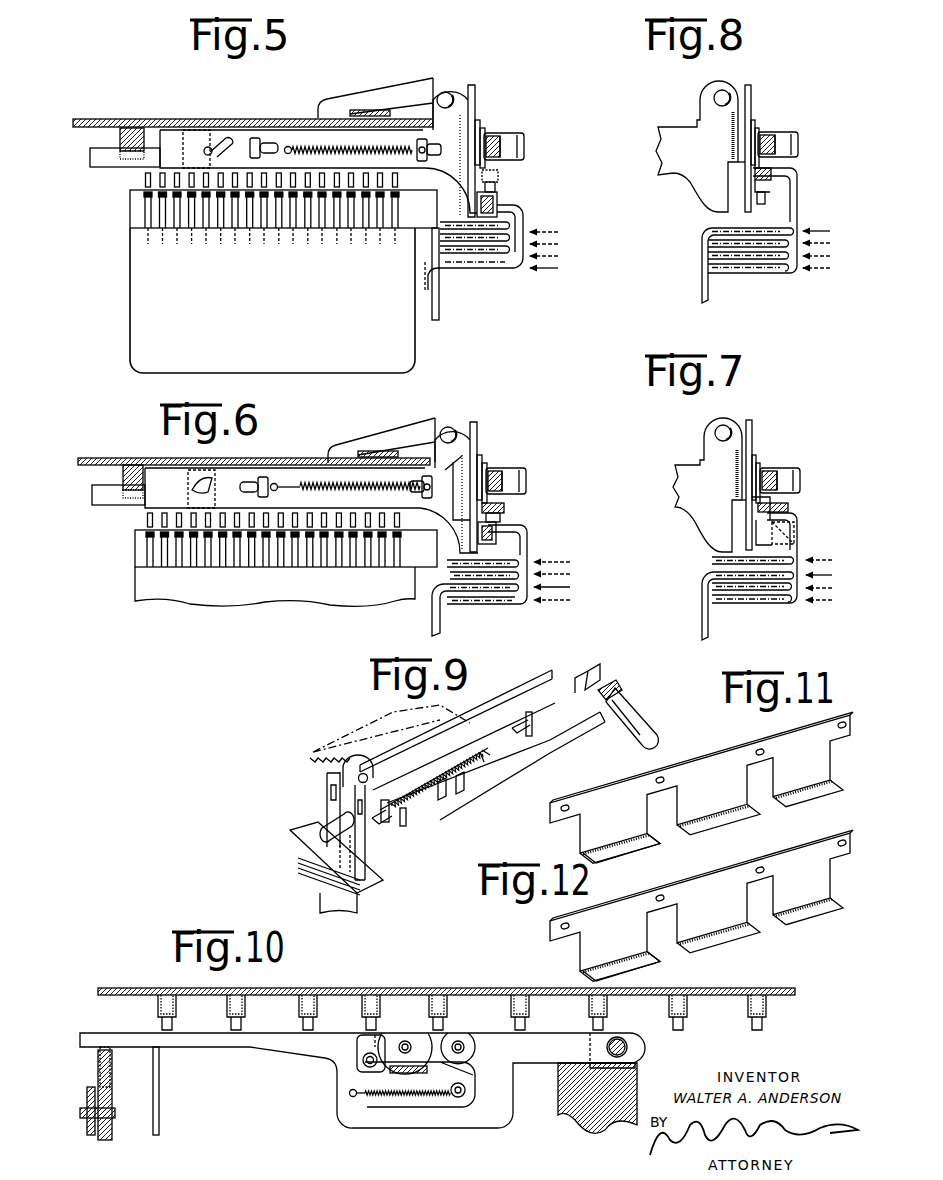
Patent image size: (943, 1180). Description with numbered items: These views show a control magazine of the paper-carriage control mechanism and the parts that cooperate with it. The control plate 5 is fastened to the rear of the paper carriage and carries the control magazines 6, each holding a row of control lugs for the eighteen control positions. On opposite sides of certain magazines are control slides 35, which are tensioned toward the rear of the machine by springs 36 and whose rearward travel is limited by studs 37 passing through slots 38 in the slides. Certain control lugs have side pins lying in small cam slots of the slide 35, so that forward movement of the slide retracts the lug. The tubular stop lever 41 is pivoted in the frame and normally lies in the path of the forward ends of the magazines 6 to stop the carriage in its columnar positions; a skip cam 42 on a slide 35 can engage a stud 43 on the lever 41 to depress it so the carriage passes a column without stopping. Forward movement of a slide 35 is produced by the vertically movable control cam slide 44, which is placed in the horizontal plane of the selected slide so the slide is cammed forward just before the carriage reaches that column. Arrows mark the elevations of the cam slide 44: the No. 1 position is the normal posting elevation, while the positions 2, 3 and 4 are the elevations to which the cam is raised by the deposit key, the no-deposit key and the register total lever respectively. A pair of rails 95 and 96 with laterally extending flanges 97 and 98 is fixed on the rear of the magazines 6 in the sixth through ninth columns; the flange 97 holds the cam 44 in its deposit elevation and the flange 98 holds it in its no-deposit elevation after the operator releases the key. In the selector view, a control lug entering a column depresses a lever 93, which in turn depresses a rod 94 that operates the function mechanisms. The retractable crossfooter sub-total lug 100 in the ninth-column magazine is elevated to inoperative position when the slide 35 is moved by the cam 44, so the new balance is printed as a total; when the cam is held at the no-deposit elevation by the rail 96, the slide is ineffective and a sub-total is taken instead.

In FIG. 5, the No. 1 position 1 is at (551, 268).
In FIG. 8, the No. 1 position 1 is at (822, 268).
In FIG. 7, the No. 1 position 1 is at (825, 600).
In FIG. 6, the No. 1 position 1 is at (558, 600).
In FIG. 5, the second key position strip 2 is at (550, 256).
In FIG. 8, the second key position strip 2 is at (822, 256).
In FIG. 7, the second key position strip 2 is at (825, 588).
In FIG. 6, the second key position strip 2 is at (559, 587).
In FIG. 5, the third key position strip 3 is at (550, 244).
In FIG. 8, the third key position strip 3 is at (822, 243).
In FIG. 7, the third key position strip 3 is at (825, 575).
In FIG. 6, the third key position strip 3 is at (558, 574).
In FIG. 5, the fourth key position strip 4 is at (550, 232).
In FIG. 8, the fourth key position strip 4 is at (823, 231).
In FIG. 7, the fourth key position strip 4 is at (825, 560).
In FIG. 6, the fourth key position strip 4 is at (558, 562).
In FIG. 5, the control plate 5 is at (260, 124).
In FIG. 6, the control plate 5 is at (300, 462).
In FIG. 9, the control plate 5 is at (335, 735).
In FIG. 10, the control plate 5 is at (449, 990).
In FIG. 5, the control magazine 6 is at (437, 93).
In FIG. 8, the control magazine 6 is at (706, 93).
In FIG. 7, the control magazine 6 is at (706, 433).
In FIG. 6, the control magazine 6 is at (438, 433).
In FIG. 9, the control magazine 6 is at (552, 679).
In FIG. 10, the control magazine 6 is at (298, 1011).
In FIG. 6, the control slide 35 is at (455, 471).
In FIG. 9, the control slide 35 is at (462, 722).
In FIG. 5, the spring 36 is at (335, 143).
In FIG. 6, the spring 36 is at (302, 480).
In FIG. 9, the spring 36 is at (440, 790).
In FIG. 5, the stud 37 is at (430, 148).
In FIG. 6, the stud 37 is at (421, 487).
In FIG. 9, the stud 37 is at (386, 812).
In FIG. 5, the slot 38 is at (438, 153).
In FIG. 9, the slot 38 is at (523, 736).
In FIG. 9, the tubular stop lever 41 is at (646, 719).
In FIG. 9, the skip cam 42 is at (598, 688).
In FIG. 9, the stud 43 is at (618, 694).
In FIG. 5, the control cam slide 44 is at (525, 212).
In FIG. 8, the control cam slide 44 is at (797, 200).
In FIG. 7, the control cam slide 44 is at (797, 534).
In FIG. 6, the control cam slide 44 is at (527, 546).
In FIG. 9, the control cam slide 44 is at (300, 840).
In FIG. 5, the selector lever 93 is at (389, 201).
In FIG. 6, the selector lever 93 is at (389, 540).
In FIG. 10, the selector lever 93 is at (270, 1045).
In FIG. 10, the rod 94 is at (160, 1096).
In FIG. 5, the cam retainer rail 95 is at (486, 138).
In FIG. 8, the cam retainer rail 95 is at (760, 131).
In FIG. 7, the cam retainer rail 95 is at (761, 473).
In FIG. 6, the cam retainer rail 95 is at (492, 479).
In FIG. 11, the cam retainer rail 95 is at (705, 768).
In FIG. 5, the cam retainer rail 96 is at (479, 130).
In FIG. 8, the cam retainer rail 96 is at (753, 122).
In FIG. 7, the cam retainer rail 96 is at (754, 463).
In FIG. 6, the cam retainer rail 96 is at (486, 471).
In FIG. 12, the cam retainer rail 96 is at (710, 885).
In FIG. 5, the flange 97 is at (498, 213).
In FIG. 8, the flange 97 is at (764, 202).
In FIG. 7, the flange 97 is at (790, 545).
In FIG. 6, the flange 97 is at (488, 529).
In FIG. 11, the flange 97 is at (735, 814).
In FIG. 5, the flange 98 is at (496, 188).
In FIG. 8, the flange 98 is at (766, 190).
In FIG. 7, the flange 98 is at (790, 516).
In FIG. 6, the flange 98 is at (500, 522).
In FIG. 12, the flange 98 is at (720, 925).
In FIG. 5, the crossfooter sub-total lug 100 is at (206, 186).
In FIG. 6, the crossfooter sub-total lug 100 is at (208, 527).